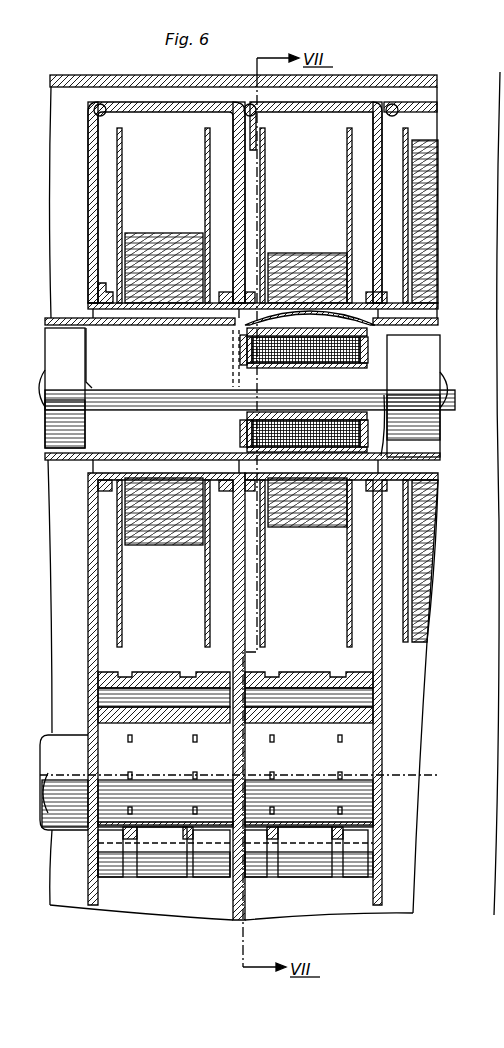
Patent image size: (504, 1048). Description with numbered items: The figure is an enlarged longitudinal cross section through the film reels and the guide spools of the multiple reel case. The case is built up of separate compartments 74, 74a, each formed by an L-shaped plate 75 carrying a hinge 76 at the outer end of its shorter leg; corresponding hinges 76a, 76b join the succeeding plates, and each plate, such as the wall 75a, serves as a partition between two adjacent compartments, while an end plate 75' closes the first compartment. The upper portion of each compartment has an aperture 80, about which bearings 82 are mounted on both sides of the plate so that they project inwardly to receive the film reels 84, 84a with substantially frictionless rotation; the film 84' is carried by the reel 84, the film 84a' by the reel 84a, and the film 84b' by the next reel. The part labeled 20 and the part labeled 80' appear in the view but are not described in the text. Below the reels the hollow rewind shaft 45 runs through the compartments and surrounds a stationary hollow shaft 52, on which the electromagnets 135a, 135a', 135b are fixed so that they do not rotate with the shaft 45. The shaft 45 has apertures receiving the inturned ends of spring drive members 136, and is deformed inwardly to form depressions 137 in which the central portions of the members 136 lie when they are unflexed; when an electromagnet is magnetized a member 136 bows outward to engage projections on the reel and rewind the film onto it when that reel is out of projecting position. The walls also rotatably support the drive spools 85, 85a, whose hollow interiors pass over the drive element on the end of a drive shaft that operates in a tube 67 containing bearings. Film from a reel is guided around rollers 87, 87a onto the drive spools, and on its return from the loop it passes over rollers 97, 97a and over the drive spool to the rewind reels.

The top frame plate 20 is at (104, 75).
The compartment 74 is at (156, 124).
The compartment 74a is at (318, 125).
The hinge 76 is at (93, 109).
The hinge 76a is at (248, 104).
The hinge 76b is at (396, 104).
The L-shaped plate 75 is at (208, 202).
The end plate 75' is at (76, 202).
The wall 75a is at (374, 191).
The film reel 84 is at (163, 215).
The film reel 84a is at (306, 215).
The film 84' is at (164, 256).
The film 84a' is at (307, 262).
The film 84b' is at (445, 207).
The bearing 82 is at (109, 294).
The aperture 80 is at (245, 303).
The arched cover 80' is at (292, 329).
The spring drive member 136 is at (97, 341).
The depression 137 is at (307, 324).
The electromagnet 135a is at (213, 391).
The electromagnet 135a' is at (89, 388).
The electromagnet 135b is at (417, 396).
The stationary hollow shaft 52 is at (173, 400).
The hollow rewind shaft 45 is at (143, 459).
The roller 87 is at (157, 672).
The roller 87a is at (303, 665).
The drive spool 85 is at (115, 740).
The drive spool 85a is at (353, 753).
The tube 67 is at (50, 818).
The roller 97 is at (167, 873).
The roller 97a is at (297, 877).